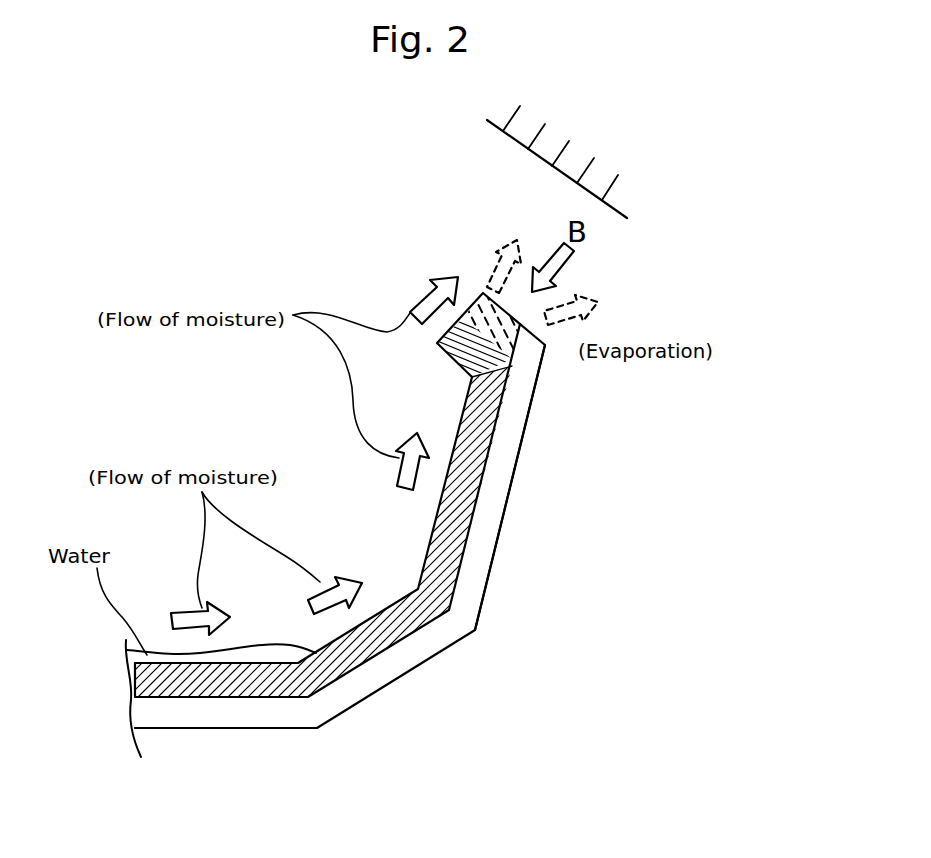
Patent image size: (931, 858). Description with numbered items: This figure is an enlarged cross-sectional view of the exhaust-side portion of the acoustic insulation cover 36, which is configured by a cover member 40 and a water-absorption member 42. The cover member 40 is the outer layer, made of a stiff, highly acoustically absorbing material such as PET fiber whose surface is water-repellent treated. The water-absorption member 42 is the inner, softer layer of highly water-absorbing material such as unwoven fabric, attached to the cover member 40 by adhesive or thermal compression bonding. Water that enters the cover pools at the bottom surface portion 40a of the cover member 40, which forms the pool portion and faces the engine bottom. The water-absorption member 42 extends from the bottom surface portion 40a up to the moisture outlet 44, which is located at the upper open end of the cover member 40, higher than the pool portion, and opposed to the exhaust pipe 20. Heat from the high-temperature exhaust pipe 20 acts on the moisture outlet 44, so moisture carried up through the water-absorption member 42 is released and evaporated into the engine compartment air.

The exhaust pipe 20 is at (598, 202).
The acoustic insulation cover 36 is at (560, 523).
The cover member 40 is at (433, 692).
The bottom surface portion 40a is at (220, 716).
The water-absorption member 42 is at (423, 568).
The moisture outlet 44 is at (482, 290).